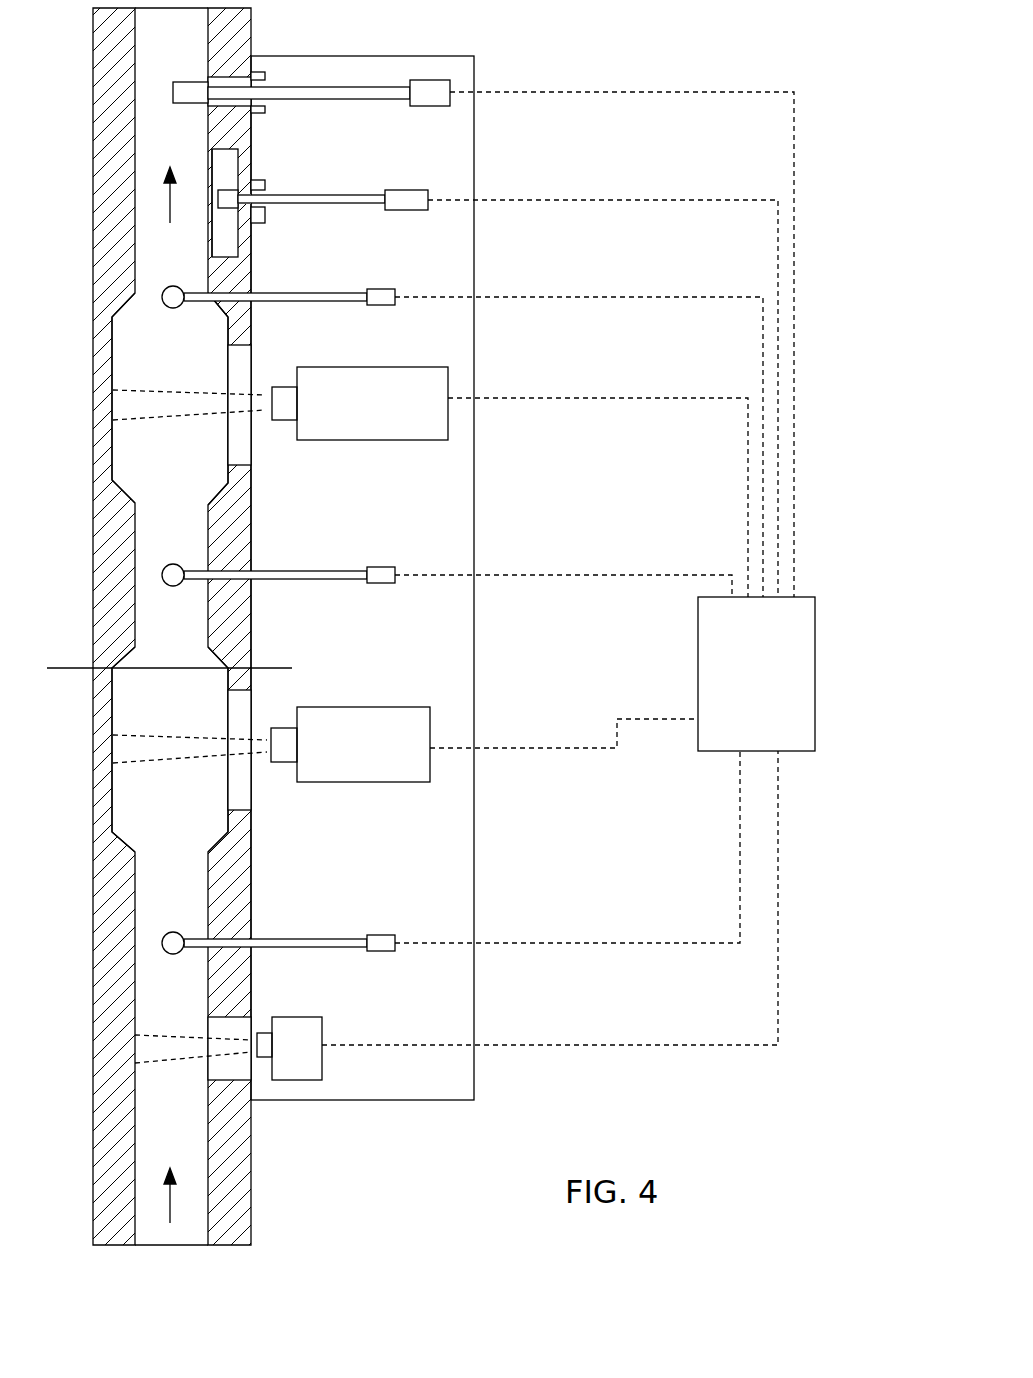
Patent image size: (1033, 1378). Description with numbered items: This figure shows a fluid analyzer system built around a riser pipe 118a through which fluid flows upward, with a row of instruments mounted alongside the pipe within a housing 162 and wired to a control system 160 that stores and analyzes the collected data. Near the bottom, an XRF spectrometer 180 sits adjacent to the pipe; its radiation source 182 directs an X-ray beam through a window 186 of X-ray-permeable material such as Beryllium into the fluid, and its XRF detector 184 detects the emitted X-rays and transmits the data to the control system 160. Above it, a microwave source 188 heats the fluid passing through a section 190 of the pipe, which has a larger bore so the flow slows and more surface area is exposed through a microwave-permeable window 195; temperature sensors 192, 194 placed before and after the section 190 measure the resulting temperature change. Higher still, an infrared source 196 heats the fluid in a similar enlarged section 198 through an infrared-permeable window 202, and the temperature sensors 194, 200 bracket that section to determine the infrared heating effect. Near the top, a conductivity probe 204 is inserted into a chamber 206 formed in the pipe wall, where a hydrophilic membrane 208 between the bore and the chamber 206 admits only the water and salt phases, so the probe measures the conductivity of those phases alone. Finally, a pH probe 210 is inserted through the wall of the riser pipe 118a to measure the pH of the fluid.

The riser pipe 118a is at (93, 110).
The control system 160 is at (815, 673).
The sensor housing 162 is at (474, 503).
The XRF spectrometer 180 is at (456, 948).
The radiation source 182 is at (265, 1058).
The XRF detector 184 is at (308, 1082).
The window 186 is at (225, 1070).
The microwave source 188 is at (359, 705).
The section 190 is at (163, 708).
The temperature sensor 192 is at (318, 918).
The temperature sensor 194 is at (308, 567).
The window 195 is at (235, 715).
The infrared source 196 is at (398, 440).
The section 198 is at (165, 378).
The temperature sensor 200 is at (310, 291).
The window 202 is at (238, 367).
The conductivity probe 204 is at (347, 195).
The chamber 206 is at (228, 170).
The hydrophilic membrane 208 is at (210, 170).
The pH probe 210 is at (333, 85).